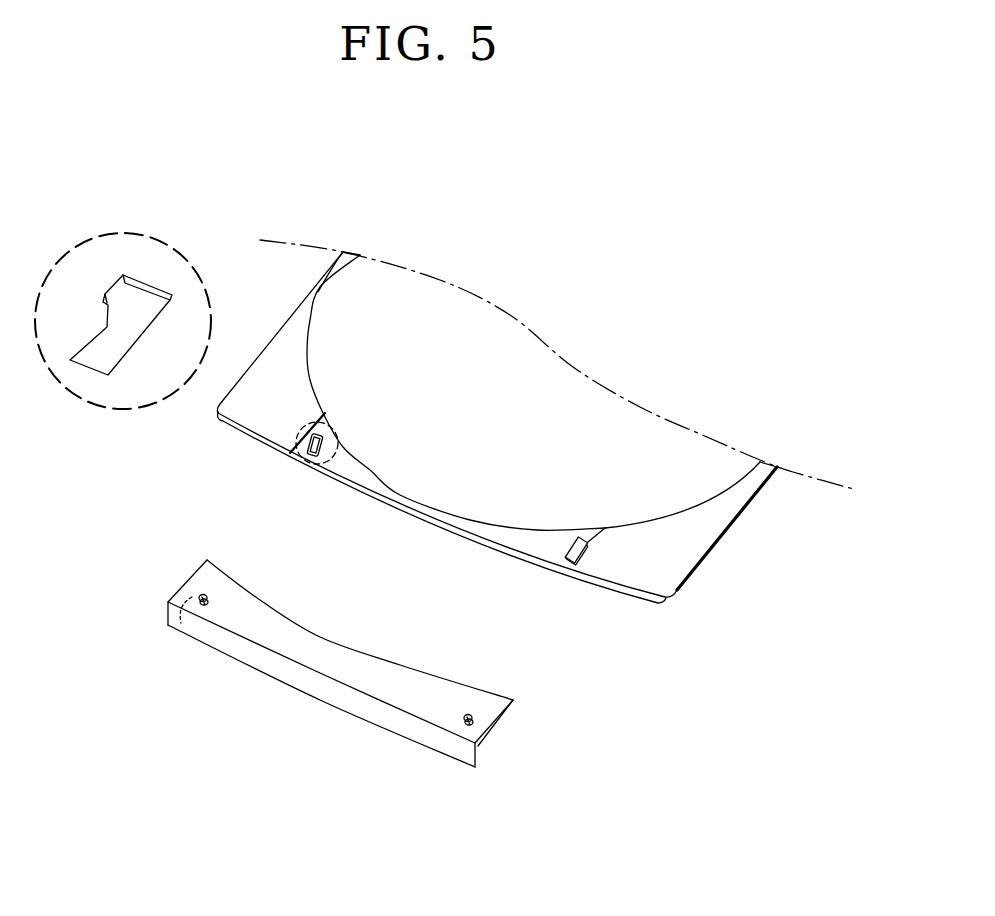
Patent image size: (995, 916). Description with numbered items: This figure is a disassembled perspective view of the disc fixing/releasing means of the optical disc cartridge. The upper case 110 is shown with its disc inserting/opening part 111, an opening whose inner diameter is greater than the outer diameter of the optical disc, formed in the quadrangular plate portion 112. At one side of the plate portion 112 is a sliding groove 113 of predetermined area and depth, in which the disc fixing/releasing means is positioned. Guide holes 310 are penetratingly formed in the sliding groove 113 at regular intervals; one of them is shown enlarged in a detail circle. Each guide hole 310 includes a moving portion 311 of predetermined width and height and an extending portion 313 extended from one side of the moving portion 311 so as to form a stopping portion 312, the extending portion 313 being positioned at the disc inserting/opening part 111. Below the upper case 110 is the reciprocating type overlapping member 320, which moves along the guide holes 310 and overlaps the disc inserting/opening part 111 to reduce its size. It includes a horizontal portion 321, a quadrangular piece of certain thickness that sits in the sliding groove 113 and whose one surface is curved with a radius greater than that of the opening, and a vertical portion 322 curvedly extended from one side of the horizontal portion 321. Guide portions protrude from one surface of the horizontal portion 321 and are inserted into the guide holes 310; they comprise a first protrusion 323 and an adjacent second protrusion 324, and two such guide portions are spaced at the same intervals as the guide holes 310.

The upper case 110 is at (700, 573).
The disc inserting/opening part 111 is at (643, 468).
The plate portion 112 is at (690, 530).
The sliding groove 113 is at (418, 503).
The guide holes 310 is at (321, 458).
The moving portion 311 is at (105, 348).
The stopping portion 312 is at (105, 292).
The extending portion 313 is at (129, 311).
The reciprocating type overlapping member 320 is at (303, 658).
The horizontal portion 321 is at (412, 698).
The vertical portion 322 is at (248, 655).
The first protrusion 323 is at (182, 630).
The second protrusion 324 is at (172, 619).